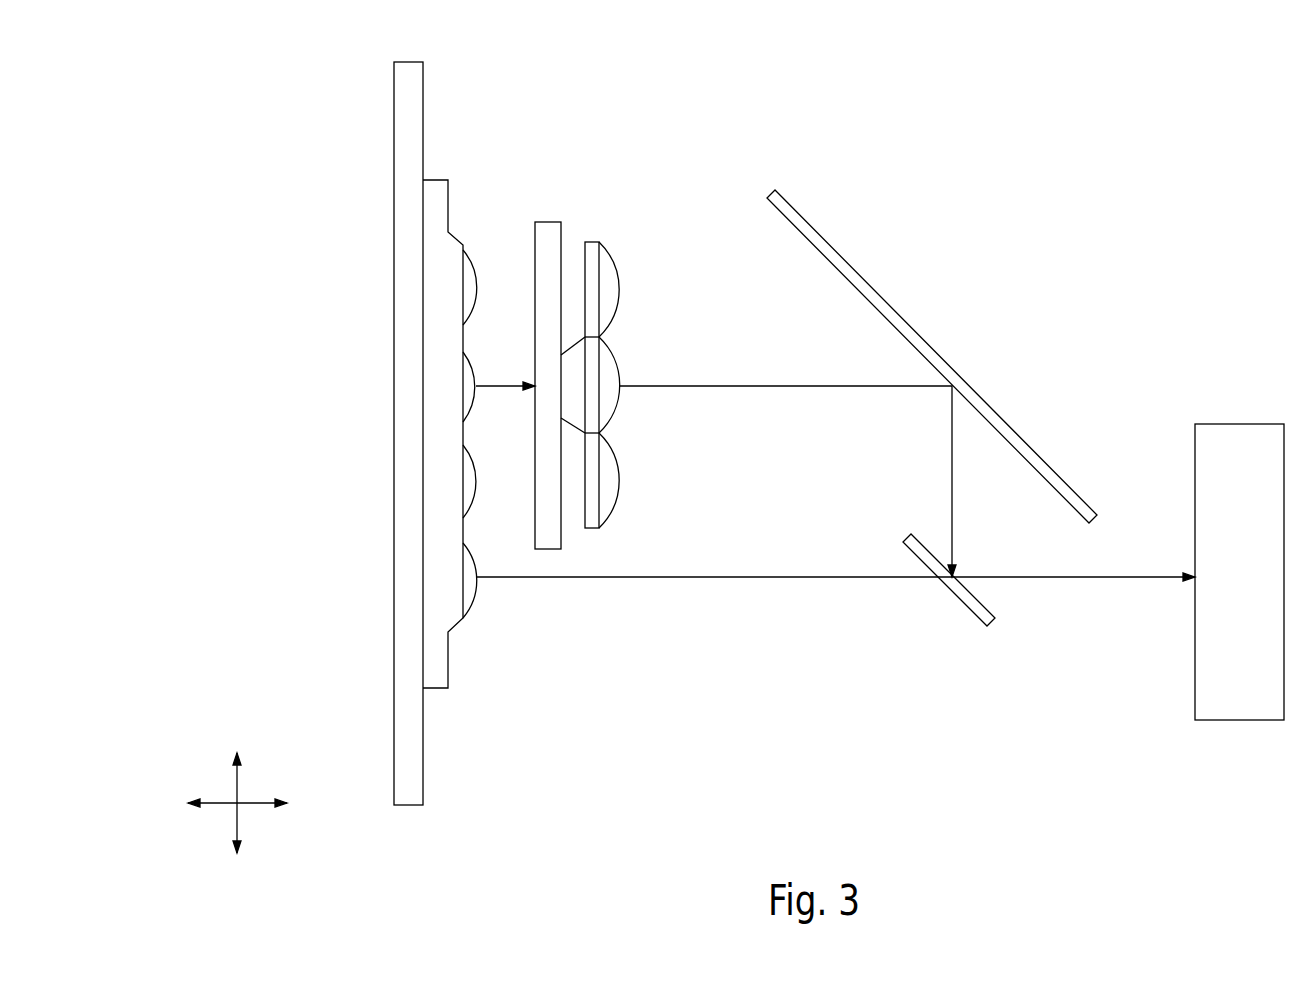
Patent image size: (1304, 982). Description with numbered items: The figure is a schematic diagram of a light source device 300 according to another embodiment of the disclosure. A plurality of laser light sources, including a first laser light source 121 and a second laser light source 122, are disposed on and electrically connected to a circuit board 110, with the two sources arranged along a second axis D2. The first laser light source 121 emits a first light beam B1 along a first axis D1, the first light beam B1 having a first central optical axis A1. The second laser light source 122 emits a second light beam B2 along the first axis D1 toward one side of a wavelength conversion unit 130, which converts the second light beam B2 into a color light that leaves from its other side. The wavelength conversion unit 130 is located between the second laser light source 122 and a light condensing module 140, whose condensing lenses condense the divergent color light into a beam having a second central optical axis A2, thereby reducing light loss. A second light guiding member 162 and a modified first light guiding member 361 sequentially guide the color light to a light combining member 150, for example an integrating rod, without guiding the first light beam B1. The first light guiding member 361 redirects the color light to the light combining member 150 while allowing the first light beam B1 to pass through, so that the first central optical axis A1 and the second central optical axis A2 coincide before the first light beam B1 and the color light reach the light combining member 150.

The light source device 300 is at (293, 29).
The circuit board 110 is at (409, 62).
The first laser light source 121 is at (466, 600).
The second laser light source 122 is at (466, 353).
The wavelength conversion unit 130 is at (548, 222).
The light condensing module 140 is at (593, 242).
The light combining member 150 is at (1238, 720).
The second light guiding member 162 is at (1065, 483).
The first light guiding member 361 is at (990, 626).
The first central optical axis A1 is at (772, 577).
The second central optical axis A2 is at (772, 386).
The first light beam B1 is at (510, 577).
The second light beam B2 is at (503, 386).
The first axis D1 is at (240, 804).
The second axis D2 is at (237, 804).